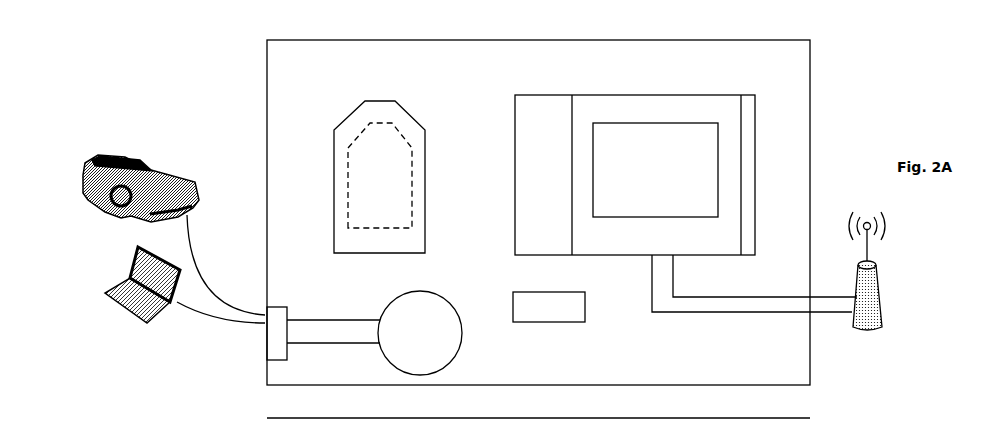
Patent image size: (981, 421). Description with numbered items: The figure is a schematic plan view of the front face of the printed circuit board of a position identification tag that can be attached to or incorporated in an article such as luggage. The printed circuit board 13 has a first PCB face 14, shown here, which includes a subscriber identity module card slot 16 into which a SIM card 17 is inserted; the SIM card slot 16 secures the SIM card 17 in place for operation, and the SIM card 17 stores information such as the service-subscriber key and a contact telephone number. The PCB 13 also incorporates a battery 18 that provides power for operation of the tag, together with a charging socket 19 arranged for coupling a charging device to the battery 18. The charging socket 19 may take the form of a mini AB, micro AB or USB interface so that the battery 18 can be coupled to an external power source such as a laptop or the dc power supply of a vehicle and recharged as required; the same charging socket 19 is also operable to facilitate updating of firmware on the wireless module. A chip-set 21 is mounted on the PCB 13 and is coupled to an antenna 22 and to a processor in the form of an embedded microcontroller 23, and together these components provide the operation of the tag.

The printed circuit board 13 is at (287, 77).
The first PCB face 14 is at (797, 120).
The SIM card slot 16 is at (332, 138).
The SIM card 17 is at (378, 175).
The battery 18 is at (405, 348).
The charging socket 19 is at (277, 340).
The chip-set 21 is at (733, 188).
The antenna 22 is at (880, 280).
The embedded microcontroller 23 is at (555, 307).